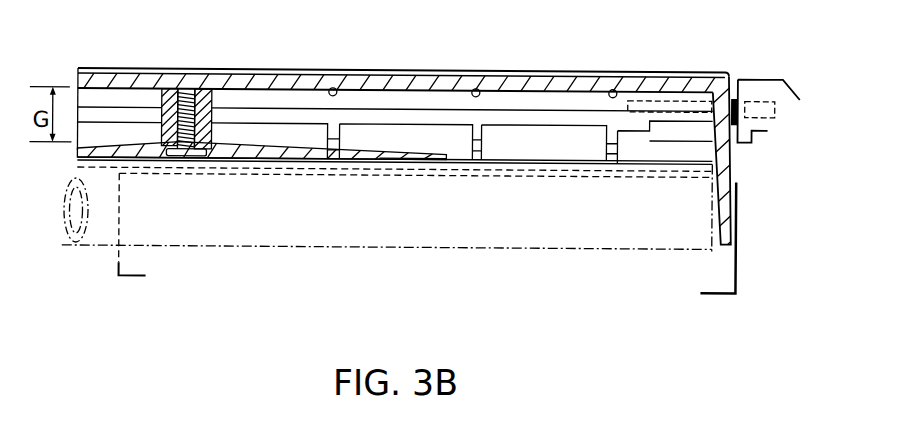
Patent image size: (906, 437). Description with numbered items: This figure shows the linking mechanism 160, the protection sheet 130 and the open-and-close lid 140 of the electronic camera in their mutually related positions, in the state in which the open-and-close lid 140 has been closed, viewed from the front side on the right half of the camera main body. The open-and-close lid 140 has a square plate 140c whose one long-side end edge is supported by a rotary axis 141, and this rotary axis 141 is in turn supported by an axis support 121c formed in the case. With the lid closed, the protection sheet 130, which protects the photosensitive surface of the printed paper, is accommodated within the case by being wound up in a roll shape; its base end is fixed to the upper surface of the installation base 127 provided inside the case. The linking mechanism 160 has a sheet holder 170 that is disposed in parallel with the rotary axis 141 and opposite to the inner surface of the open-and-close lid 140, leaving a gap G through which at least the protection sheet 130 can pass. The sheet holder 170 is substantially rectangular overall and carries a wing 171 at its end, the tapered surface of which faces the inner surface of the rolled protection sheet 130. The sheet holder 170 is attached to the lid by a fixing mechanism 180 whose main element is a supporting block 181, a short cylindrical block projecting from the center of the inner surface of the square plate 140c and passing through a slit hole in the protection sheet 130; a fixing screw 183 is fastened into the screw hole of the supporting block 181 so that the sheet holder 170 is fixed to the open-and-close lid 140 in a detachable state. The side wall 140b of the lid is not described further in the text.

The axis support 121c is at (757, 75).
The installation base 127 is at (739, 255).
The protection sheet 130 is at (422, 250).
The open-and-close lid 140 is at (413, 72).
The side wall of cover plate 140b is at (732, 177).
The square plate 140c is at (517, 98).
The rotary axis 141 is at (648, 97).
The linking mechanism 160 is at (203, 283).
The sheet holder 170 is at (285, 158).
The wing 171 is at (400, 158).
The fixing mechanism 180 is at (222, 92).
The supporting block 181 is at (142, 75).
The fixing screw 183 is at (185, 257).